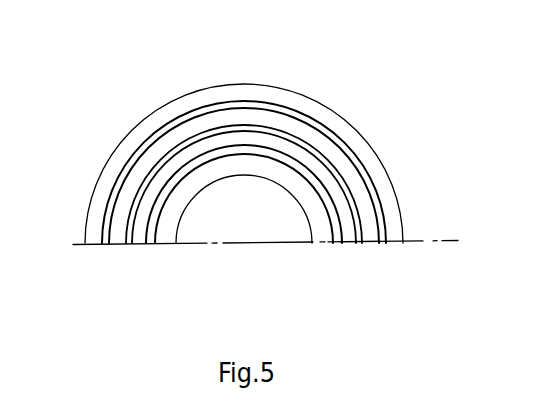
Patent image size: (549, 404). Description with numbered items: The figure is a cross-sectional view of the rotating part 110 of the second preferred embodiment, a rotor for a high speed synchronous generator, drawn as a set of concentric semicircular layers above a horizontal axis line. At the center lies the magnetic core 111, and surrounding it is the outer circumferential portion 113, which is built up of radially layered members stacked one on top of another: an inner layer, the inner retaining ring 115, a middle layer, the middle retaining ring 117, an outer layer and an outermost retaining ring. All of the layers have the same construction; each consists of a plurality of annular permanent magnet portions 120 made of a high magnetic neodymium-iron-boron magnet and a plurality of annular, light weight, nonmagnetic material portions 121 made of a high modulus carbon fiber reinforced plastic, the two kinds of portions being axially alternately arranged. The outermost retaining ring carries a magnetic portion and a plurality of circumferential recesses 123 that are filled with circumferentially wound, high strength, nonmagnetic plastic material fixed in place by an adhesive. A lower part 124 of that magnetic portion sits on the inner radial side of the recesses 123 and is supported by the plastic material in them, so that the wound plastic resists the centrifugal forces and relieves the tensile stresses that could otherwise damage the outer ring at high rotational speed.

The rotating part 110 is at (308, 90).
The magnetic core 111 is at (212, 223).
The outer circumferential portion 113 is at (358, 243).
The inner retaining ring 115 is at (175, 183).
The middle retaining ring 117 is at (245, 128).
The annular permanent magnet portions 120 is at (202, 148).
The annular nonmagnetic material portions 121 is at (320, 143).
The circumferential recesses 123 is at (383, 188).
The lower part of the magnetic portion 124 is at (355, 163).